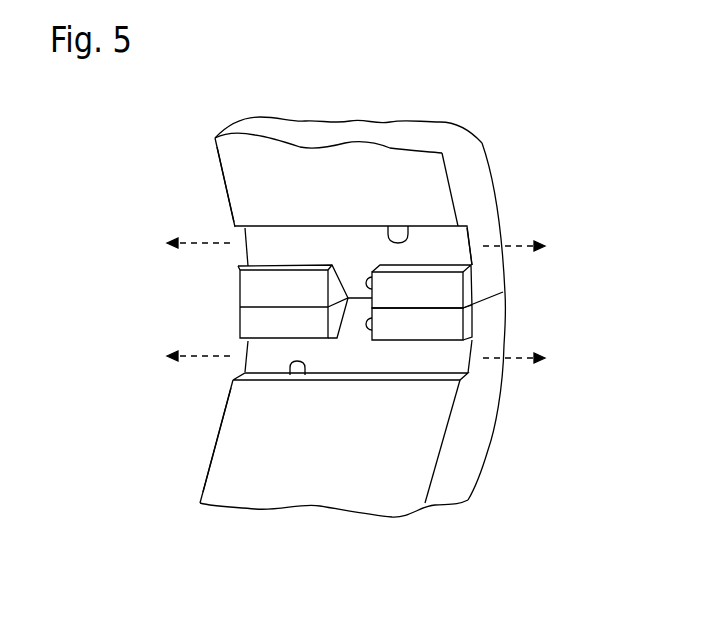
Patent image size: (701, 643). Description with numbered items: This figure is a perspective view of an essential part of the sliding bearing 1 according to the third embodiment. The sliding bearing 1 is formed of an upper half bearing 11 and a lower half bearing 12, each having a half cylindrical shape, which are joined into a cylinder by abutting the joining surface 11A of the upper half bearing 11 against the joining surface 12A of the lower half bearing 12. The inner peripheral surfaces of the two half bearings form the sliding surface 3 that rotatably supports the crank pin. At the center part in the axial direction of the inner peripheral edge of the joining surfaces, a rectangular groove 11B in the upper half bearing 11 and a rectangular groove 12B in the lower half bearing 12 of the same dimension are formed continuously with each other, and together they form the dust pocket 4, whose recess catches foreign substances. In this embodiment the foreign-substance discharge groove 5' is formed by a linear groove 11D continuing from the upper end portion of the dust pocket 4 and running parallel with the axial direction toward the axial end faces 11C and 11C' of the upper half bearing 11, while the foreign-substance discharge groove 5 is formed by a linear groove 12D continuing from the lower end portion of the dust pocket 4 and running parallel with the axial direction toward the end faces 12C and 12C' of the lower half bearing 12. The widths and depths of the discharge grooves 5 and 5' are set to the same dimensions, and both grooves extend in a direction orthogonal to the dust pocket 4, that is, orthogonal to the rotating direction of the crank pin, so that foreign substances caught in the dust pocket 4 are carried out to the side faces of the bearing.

The sliding bearing 1 is at (537, 202).
The sliding surface 3 is at (353, 487).
The dust pocket 4 is at (353, 313).
The foreign-substance discharge groove 5 is at (358, 386).
The foreign-substance discharge groove 5' is at (358, 218).
The upper half bearing 11 is at (475, 168).
The joining surface 11A is at (476, 303).
The rectangular groove 11B is at (378, 290).
The axial end face 11C is at (514, 244).
The axial end face 11C' is at (194, 184).
The linear groove 11D is at (404, 226).
The lower half bearing 12 is at (468, 455).
The joining surface 12A is at (476, 303).
The rectangular groove 12B is at (378, 331).
The end face 12C is at (532, 422).
The end face 12C' is at (178, 440).
The linear groove 12D is at (305, 375).